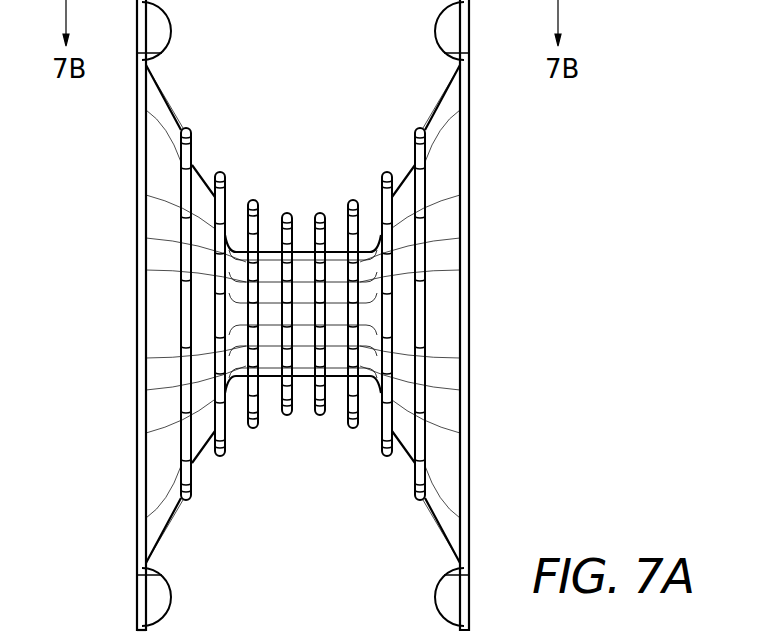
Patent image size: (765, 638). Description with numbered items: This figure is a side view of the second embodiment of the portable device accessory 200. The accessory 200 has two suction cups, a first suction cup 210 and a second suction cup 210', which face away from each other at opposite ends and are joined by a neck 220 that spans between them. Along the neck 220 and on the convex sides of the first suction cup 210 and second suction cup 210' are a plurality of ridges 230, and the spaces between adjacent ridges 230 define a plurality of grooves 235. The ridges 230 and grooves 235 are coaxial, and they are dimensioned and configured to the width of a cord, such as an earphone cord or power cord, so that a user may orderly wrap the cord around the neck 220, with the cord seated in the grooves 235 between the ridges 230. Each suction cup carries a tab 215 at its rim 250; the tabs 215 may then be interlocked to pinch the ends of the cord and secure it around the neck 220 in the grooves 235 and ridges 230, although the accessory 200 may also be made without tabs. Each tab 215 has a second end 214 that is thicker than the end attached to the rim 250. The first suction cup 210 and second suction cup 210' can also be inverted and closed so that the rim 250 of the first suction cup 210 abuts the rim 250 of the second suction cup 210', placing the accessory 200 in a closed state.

The portable device accessory 200 is at (280, 149).
The first suction cup 210 is at (87, 315).
The second suction cup 210' is at (523, 315).
The second end 214 is at (155, 598).
The tab 215 is at (134, 598).
The neck 220 is at (284, 480).
The ridge 230 is at (246, 402).
The groove 235 is at (268, 317).
The rim 250 is at (137, 167).